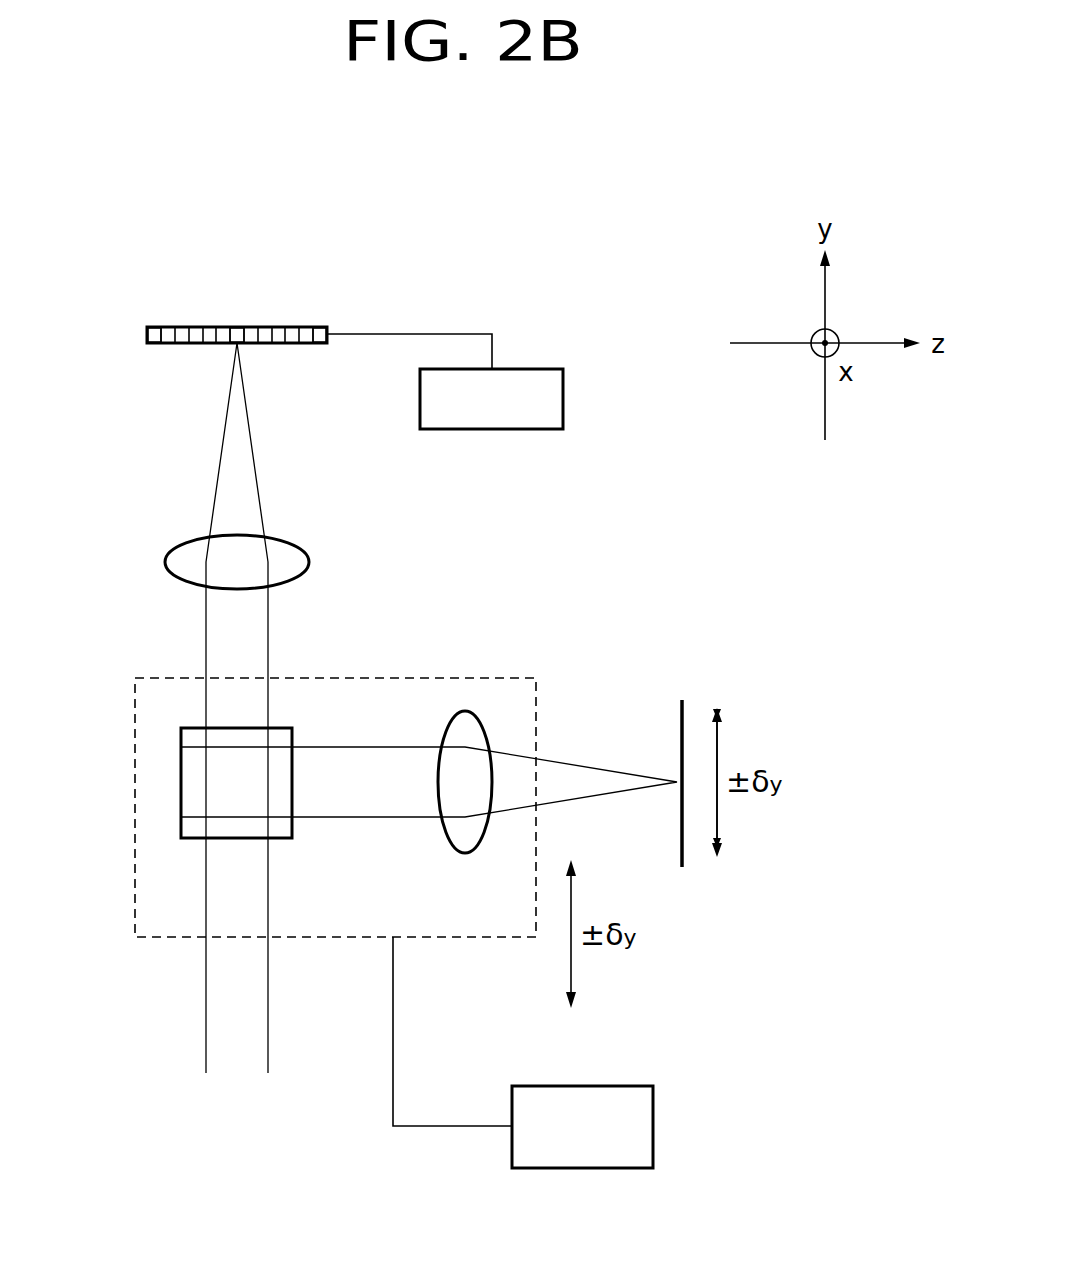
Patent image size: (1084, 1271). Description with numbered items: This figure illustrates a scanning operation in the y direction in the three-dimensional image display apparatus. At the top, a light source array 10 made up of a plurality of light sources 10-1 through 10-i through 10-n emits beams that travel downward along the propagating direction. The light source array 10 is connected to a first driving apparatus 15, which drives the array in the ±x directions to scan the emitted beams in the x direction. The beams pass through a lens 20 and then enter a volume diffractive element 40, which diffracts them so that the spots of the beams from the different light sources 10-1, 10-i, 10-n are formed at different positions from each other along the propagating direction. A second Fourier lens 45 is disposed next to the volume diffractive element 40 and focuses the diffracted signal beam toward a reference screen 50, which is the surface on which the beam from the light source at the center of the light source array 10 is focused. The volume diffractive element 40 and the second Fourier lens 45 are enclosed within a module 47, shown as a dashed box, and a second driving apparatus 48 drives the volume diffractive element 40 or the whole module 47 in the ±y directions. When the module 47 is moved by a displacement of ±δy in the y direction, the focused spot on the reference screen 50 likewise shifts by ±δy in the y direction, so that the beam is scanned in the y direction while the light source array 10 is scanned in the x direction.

The light source array 10 is at (152, 352).
The light source 10-1 is at (155, 327).
The light source 10-i is at (237, 327).
The light source 10-n is at (318, 327).
The first driving apparatus 15 is at (563, 399).
The collimating lens 20 is at (309, 562).
The volume diffractive element 40 is at (285, 840).
The second Fourier lens 45 is at (465, 853).
The module 47 is at (500, 678).
The second driving apparatus 48 is at (653, 1127).
The reference screen 50 is at (681, 702).